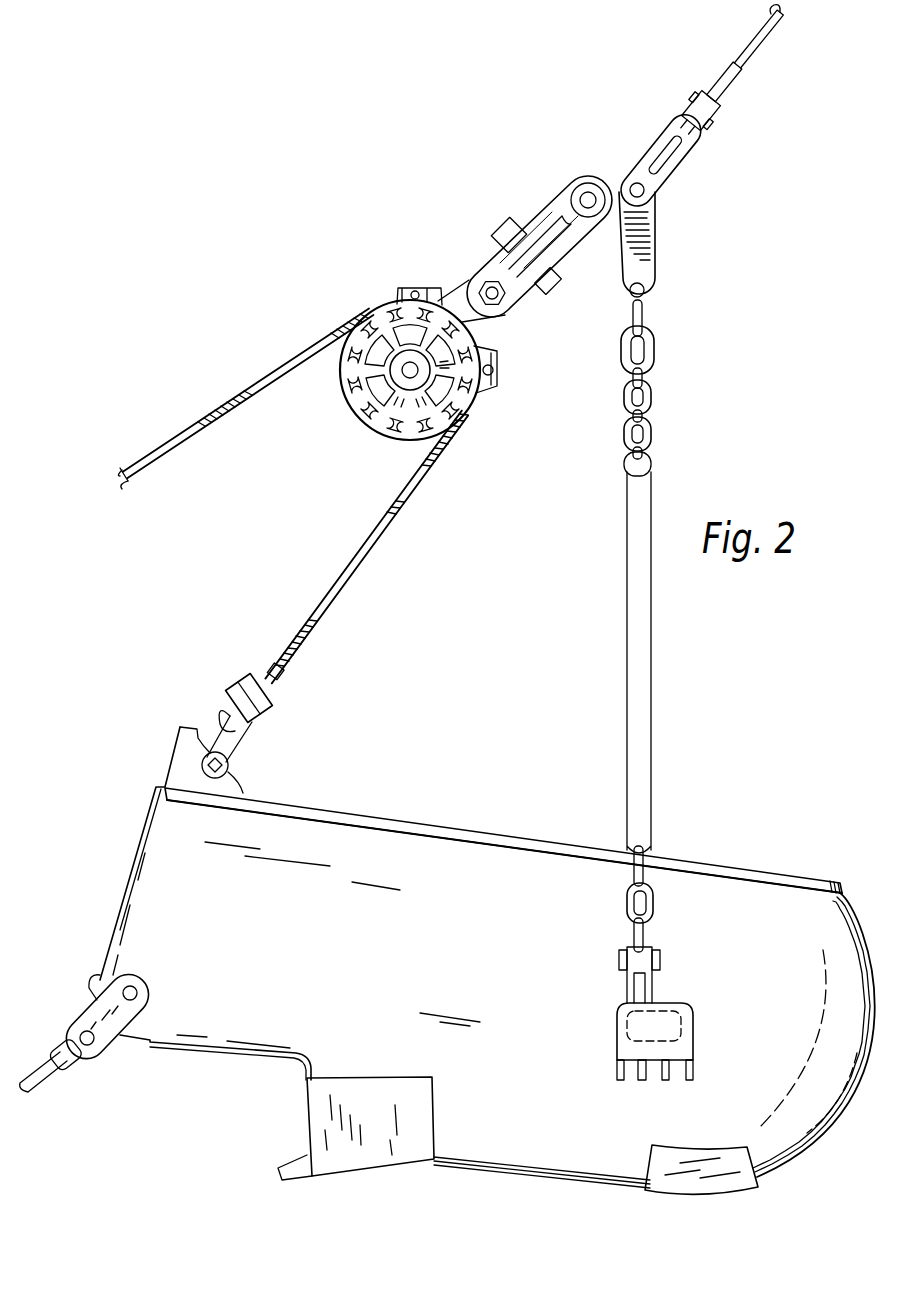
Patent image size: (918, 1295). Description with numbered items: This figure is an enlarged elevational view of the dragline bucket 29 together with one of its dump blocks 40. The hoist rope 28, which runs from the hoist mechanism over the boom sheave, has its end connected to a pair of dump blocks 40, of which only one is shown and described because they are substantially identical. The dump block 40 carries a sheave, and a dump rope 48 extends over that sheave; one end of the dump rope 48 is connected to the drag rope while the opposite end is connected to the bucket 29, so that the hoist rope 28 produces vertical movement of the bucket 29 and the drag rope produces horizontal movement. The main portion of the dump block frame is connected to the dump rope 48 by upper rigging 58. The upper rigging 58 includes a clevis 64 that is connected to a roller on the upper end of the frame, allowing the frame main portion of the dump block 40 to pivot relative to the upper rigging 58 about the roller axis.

The hoist rope 28 is at (758, 40).
The bucket 29 is at (492, 948).
The dump block 40 is at (358, 446).
The dump rope 48 is at (244, 395).
The upper rigging 58 is at (537, 182).
The clevis 64 is at (487, 277).